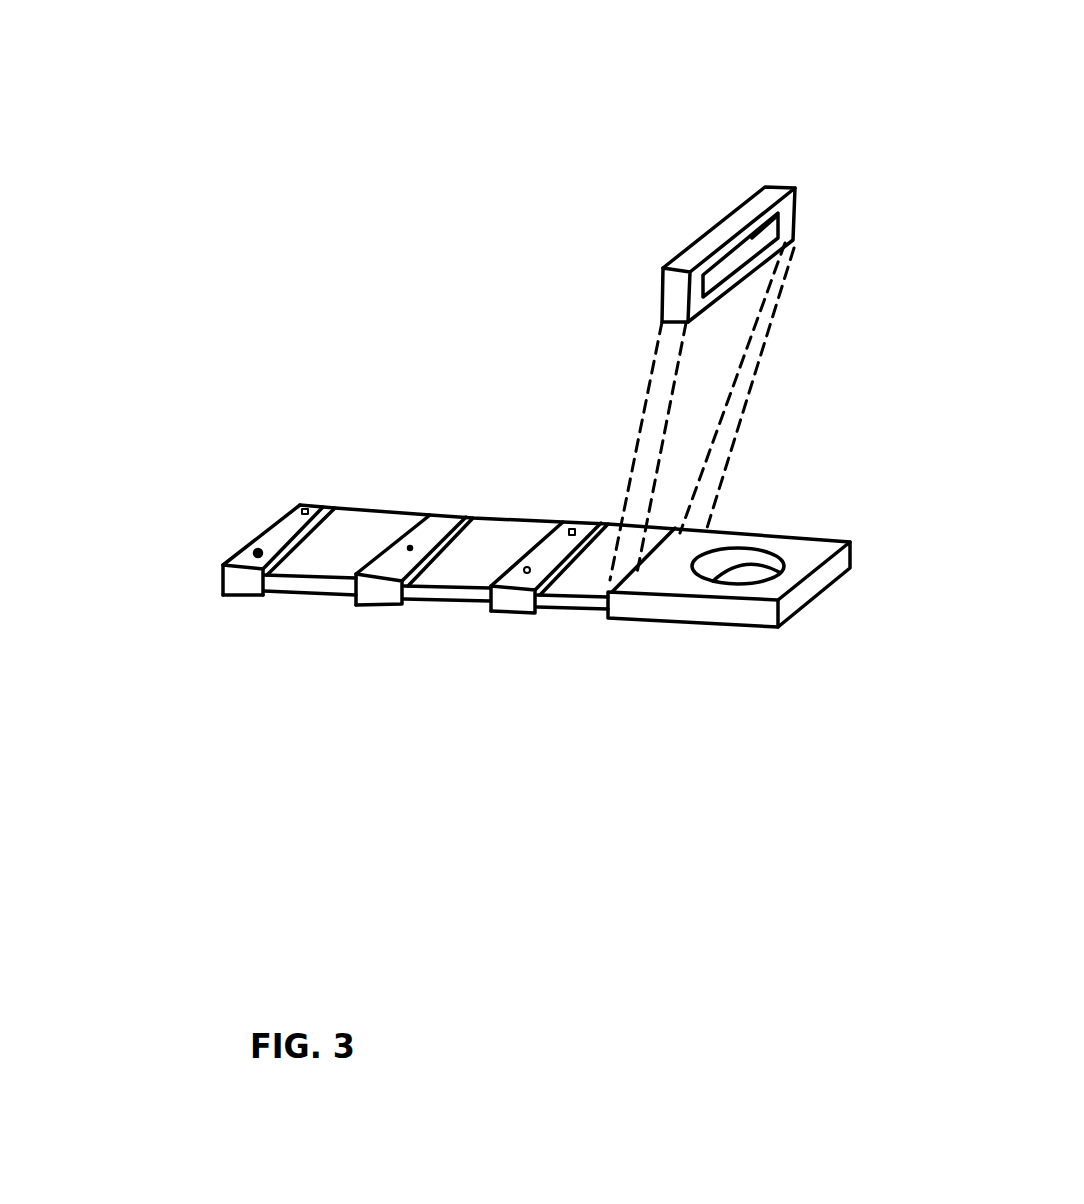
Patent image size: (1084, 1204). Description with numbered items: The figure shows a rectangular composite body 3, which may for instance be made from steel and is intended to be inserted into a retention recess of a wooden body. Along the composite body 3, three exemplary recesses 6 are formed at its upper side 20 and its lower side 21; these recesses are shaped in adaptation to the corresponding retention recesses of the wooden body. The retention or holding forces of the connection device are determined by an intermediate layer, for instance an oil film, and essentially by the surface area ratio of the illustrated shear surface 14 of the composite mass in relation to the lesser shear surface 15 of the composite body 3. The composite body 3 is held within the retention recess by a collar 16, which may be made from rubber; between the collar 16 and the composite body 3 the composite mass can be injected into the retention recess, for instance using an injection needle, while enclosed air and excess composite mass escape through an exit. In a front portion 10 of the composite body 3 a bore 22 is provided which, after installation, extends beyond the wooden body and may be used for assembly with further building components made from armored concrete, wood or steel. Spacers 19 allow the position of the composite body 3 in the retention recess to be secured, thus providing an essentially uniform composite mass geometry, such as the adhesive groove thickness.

The composite body 3 is at (670, 693).
The recesses 6 is at (445, 632).
The front portion 10 is at (822, 435).
The shear surface 14 is at (490, 578).
The shear surface 15 is at (410, 548).
The collar 16 is at (750, 200).
The spacers 19 is at (258, 553).
The upper side 20 is at (281, 455).
The lower side 21 is at (303, 652).
The bore 22 is at (743, 573).